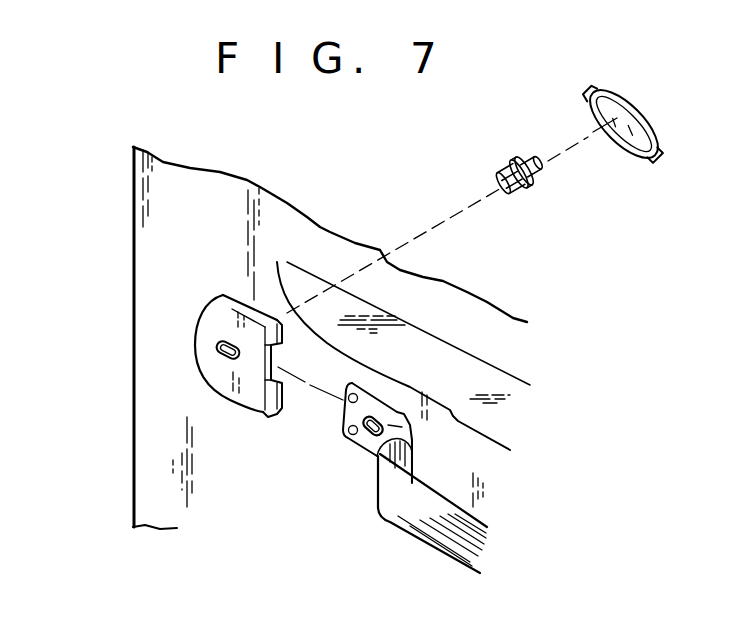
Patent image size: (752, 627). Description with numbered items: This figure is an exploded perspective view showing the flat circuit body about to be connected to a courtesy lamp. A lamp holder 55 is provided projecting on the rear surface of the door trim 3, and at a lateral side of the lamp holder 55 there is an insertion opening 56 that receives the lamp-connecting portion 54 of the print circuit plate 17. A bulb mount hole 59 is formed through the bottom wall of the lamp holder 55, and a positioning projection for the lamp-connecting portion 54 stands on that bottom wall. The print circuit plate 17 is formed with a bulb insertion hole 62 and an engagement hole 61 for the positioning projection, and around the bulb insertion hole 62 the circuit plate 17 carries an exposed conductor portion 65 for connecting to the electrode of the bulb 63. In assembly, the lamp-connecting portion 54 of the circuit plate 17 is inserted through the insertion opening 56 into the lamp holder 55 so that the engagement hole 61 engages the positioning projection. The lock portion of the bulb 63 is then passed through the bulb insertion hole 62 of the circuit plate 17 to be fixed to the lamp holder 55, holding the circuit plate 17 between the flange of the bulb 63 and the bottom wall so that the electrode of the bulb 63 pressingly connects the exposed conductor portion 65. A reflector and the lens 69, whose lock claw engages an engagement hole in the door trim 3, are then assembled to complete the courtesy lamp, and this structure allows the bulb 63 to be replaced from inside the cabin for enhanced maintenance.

The door trim 3 is at (132, 325).
The print circuit plate 17 is at (407, 528).
The lamp-connecting portion 54 is at (361, 431).
The lamp holder 55 is at (238, 333).
The insertion opening 56 is at (277, 357).
The bulb mount hole 59 is at (220, 356).
The engagement hole 61 is at (350, 434).
The bulb insertion hole 62 is at (370, 437).
The bulb 63 is at (530, 190).
The exposed conductor portion 65 is at (413, 438).
The lens 69 is at (657, 140).